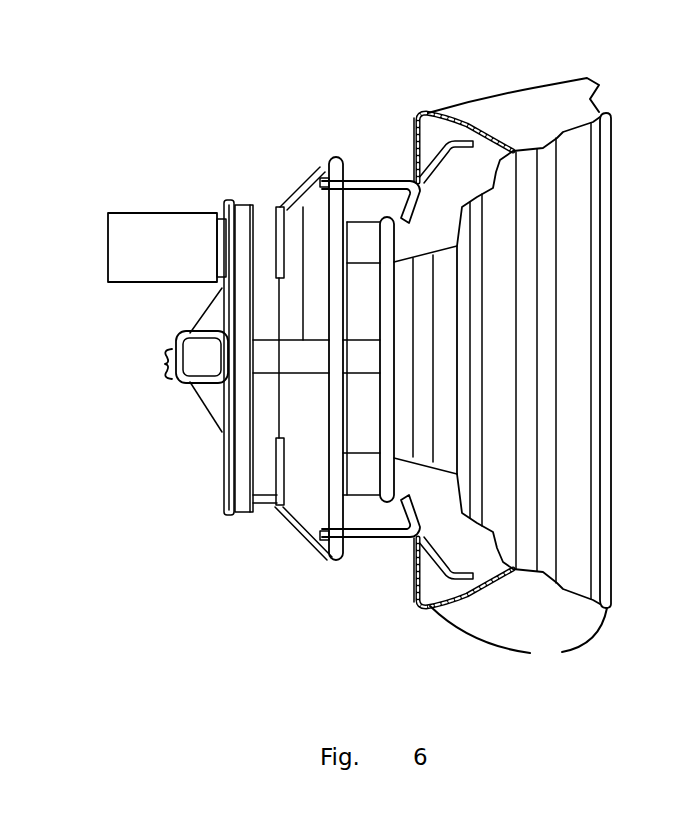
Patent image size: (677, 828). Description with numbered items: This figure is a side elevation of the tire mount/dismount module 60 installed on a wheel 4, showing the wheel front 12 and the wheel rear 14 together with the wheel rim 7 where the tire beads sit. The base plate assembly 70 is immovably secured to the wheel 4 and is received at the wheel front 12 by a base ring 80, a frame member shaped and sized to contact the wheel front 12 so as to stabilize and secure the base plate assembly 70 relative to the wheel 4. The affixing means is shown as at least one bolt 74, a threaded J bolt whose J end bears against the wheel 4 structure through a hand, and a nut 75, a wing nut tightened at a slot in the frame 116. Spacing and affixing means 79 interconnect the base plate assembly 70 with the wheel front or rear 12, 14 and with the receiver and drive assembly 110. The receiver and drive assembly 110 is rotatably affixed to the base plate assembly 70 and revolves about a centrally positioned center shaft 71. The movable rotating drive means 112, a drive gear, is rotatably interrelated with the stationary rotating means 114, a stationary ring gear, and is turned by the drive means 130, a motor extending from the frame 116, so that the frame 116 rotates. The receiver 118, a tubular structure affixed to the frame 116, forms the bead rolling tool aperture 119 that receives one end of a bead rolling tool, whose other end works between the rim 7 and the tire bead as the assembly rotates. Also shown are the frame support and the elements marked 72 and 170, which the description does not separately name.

The wheel 4 is at (563, 293).
The wheel rim 7 is at (521, 365).
The wheel front 12 is at (380, 288).
The wheel rear 14 is at (610, 224).
The tire mount/dismount module 60 is at (146, 519).
The base plate assembly 70 is at (235, 625).
The center shaft 71 is at (160, 362).
The angled plate 72 is at (293, 530).
The bolt 74 is at (355, 238).
The nut 75 is at (296, 192).
The spacing and affixing means 79 is at (357, 237).
The base ring 80 is at (334, 433).
The receiver and drive assembly 110 is at (236, 560).
The movable rotating drive means 112 is at (218, 217).
The stationary rotating means 114 is at (247, 508).
The frame 116 is at (212, 406).
The receiver 118 is at (165, 387).
The bead rolling tool aperture 119 is at (186, 378).
The drive means 130 is at (150, 227).
The hook bar 170 is at (348, 145).